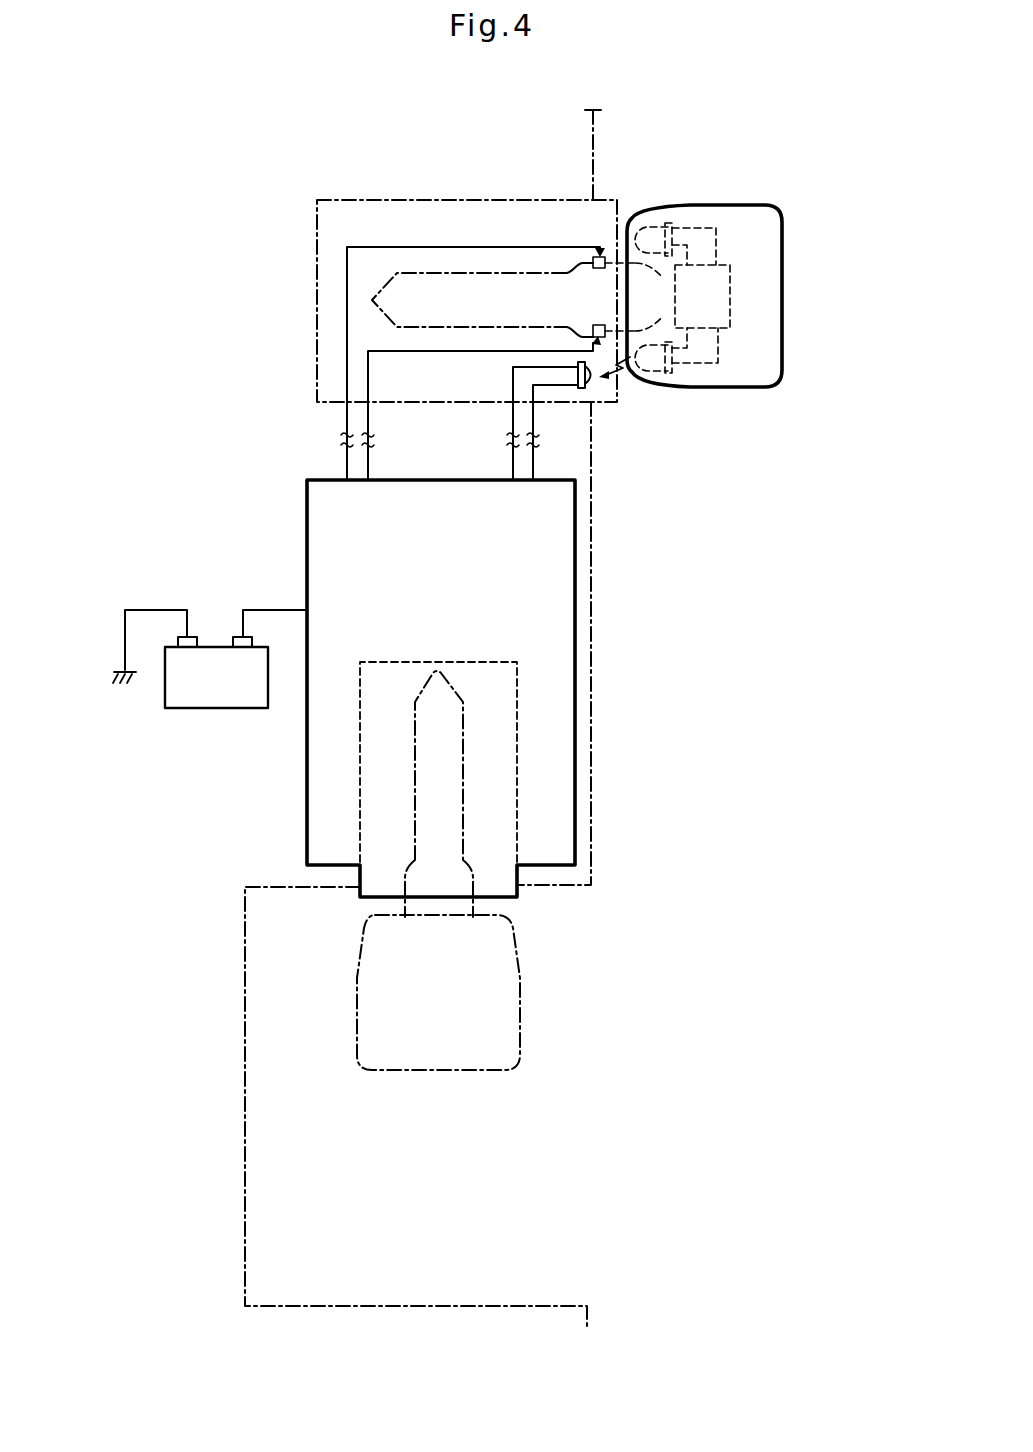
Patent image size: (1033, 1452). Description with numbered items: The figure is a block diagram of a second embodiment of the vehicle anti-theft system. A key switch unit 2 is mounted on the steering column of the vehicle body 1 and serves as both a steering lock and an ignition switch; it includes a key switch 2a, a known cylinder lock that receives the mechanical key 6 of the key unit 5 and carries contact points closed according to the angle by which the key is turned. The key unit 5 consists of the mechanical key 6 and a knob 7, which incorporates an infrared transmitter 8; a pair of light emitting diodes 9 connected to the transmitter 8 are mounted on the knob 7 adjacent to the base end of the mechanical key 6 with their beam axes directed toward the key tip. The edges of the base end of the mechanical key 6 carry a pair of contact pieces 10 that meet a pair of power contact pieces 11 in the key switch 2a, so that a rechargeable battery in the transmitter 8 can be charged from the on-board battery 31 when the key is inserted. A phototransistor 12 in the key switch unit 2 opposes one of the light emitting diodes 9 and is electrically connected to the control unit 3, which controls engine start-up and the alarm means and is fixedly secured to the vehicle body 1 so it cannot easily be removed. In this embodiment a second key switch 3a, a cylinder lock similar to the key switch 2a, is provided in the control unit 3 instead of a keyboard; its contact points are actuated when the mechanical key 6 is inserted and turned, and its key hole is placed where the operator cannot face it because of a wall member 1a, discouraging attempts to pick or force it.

The vehicle body 1 is at (598, 142).
The wall member 1a is at (535, 1306).
The key switch unit 2 is at (358, 200).
The key switch 2a is at (603, 248).
The control unit 3 is at (584, 633).
The second key switch 3a is at (520, 895).
The key unit 5 is at (524, 974).
The mechanical key 6 is at (483, 272).
The knob 7 is at (738, 205).
The infrared transmitter 8 is at (731, 298).
The light emitting diodes 9 is at (655, 226).
The contact pieces 10 is at (596, 323).
The power contact pieces 11 is at (609, 256).
The phototransistor 12 is at (590, 388).
The on-board battery 31 is at (238, 710).